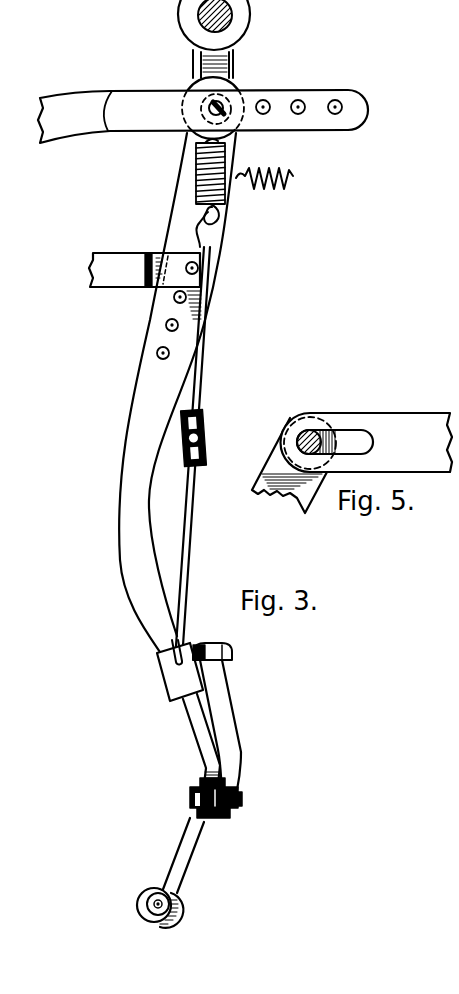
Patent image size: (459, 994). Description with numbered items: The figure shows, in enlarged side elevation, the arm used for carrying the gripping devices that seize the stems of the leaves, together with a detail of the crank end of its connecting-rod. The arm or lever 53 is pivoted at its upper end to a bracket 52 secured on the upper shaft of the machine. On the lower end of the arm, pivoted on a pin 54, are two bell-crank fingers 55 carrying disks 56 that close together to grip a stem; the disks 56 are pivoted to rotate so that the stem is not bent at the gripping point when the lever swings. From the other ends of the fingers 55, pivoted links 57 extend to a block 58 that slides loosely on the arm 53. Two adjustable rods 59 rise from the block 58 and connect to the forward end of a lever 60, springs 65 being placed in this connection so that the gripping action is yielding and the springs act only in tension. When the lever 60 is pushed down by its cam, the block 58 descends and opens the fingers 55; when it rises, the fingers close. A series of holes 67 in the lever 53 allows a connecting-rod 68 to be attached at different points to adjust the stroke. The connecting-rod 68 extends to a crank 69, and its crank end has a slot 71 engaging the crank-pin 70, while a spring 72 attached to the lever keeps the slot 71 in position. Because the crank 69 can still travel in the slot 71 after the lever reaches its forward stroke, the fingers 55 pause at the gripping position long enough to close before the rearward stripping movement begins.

In FIG. 3, the bracket 52 is at (250, 17).
In FIG. 3, the lever 60 is at (178, 90).
In FIG. 3, the arm or lever 53 is at (121, 520).
In FIG. 3, the spring 65 is at (196, 176).
In FIG. 3, the spring 72 is at (294, 176).
In FIG. 3, the connecting-rod 68 is at (144, 270).
In FIG. 5, the connecting-rod 68 is at (367, 442).
In FIG. 3, the holes 67 is at (156, 352).
In FIG. 3, the adjustable rods 59 is at (197, 537).
In FIG. 3, the block 58 is at (158, 683).
In FIG. 3, the links 57 is at (236, 717).
In FIG. 3, the pin 54 is at (240, 812).
In FIG. 3, the bell-crank fingers 55 is at (198, 856).
In FIG. 3, the disks 56 is at (180, 902).
In FIG. 5, the crank-pin 70 is at (300, 438).
In FIG. 5, the slot 71 is at (355, 437).
In FIG. 5, the crank 69 is at (283, 504).